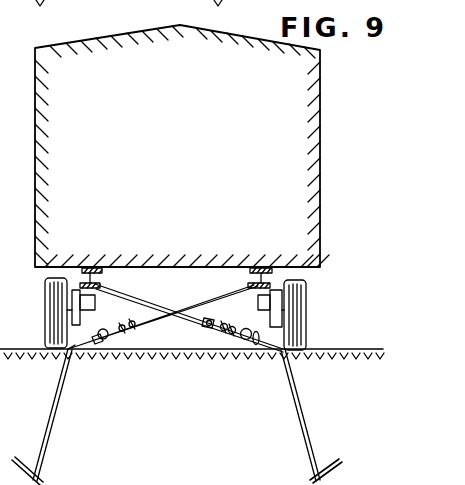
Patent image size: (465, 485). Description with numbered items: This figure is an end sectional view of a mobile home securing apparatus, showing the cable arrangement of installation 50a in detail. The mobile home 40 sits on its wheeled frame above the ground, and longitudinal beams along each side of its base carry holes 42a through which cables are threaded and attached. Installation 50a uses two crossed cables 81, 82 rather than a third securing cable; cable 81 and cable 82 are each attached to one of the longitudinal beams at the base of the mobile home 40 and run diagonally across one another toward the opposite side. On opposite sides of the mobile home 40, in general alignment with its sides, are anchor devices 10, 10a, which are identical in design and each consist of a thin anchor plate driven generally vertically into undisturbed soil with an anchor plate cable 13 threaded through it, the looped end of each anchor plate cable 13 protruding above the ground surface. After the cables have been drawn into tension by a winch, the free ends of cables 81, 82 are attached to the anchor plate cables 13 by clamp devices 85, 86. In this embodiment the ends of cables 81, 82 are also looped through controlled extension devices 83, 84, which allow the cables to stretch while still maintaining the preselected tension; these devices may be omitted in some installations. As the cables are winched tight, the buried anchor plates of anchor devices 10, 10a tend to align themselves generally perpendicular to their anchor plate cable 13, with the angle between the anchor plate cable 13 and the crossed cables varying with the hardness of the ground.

The mobile home 40 is at (321, 135).
The installation 50a is at (328, 284).
The clamp device 85 is at (130, 318).
The controlled extension device 83 is at (103, 340).
The cable 81 is at (151, 323).
The cable 82 is at (206, 328).
The clamp device 86 is at (242, 338).
The controlled extension device 84 is at (255, 345).
The anchor plate cable 13 is at (54, 418).
The anchor device 10a is at (45, 477).
The anchor device 10 is at (306, 471).
The holes 42a is at (185, 473).